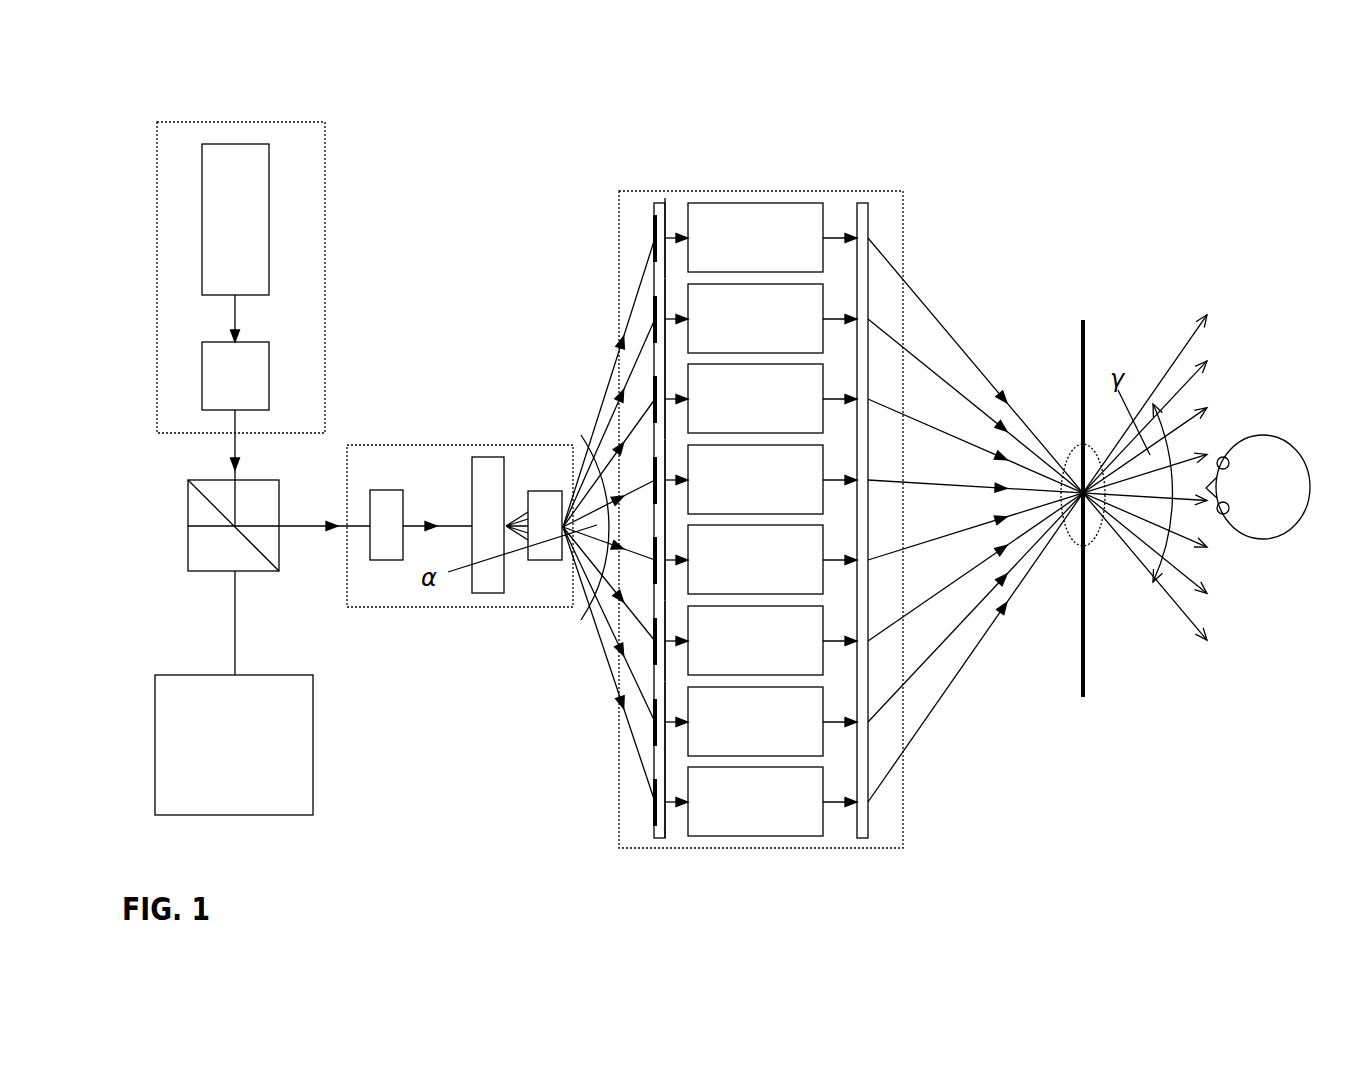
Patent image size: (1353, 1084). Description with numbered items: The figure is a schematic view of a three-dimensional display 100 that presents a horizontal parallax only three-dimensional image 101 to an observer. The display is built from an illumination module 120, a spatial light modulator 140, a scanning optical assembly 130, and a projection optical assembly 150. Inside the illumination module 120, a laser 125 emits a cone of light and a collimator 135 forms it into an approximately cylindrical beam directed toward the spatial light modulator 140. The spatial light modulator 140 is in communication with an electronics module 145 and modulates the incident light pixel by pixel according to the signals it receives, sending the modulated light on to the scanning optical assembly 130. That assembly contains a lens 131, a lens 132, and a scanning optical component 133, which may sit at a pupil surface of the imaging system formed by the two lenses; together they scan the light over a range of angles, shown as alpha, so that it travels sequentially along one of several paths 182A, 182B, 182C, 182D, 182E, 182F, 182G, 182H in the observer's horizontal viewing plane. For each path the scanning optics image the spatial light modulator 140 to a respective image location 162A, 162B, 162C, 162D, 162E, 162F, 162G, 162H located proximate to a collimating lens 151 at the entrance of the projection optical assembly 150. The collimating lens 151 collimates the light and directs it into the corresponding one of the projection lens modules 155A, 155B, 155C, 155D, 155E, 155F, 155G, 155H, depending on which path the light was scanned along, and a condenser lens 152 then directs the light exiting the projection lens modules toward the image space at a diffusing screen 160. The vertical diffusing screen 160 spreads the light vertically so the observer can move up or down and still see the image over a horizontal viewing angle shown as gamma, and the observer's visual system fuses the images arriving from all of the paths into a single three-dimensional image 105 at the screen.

The three-dimensional display 100 is at (970, 122).
The three-dimensional image 101 is at (1263, 503).
The three-dimensional image 105 is at (1068, 452).
The illumination module 120 is at (325, 257).
The laser 125 is at (216, 229).
The scanning optical assembly 130 is at (448, 607).
The lens 131 is at (391, 523).
The lens 132 is at (549, 525).
The scanning optical component 133 is at (483, 502).
The collimator 135 is at (216, 390).
The spatial light modulator 140 is at (188, 526).
The electronics module 145 is at (215, 763).
The projection optical assembly 150 is at (743, 191).
The collimating lens 151 is at (652, 838).
The condenser lens 152 is at (868, 840).
The projection lens module 155A is at (730, 250).
The projection lens module 155B is at (730, 331).
The projection lens module 155C is at (730, 411).
The projection lens module 155D is at (730, 492).
The projection lens module 155E is at (730, 572).
The projection lens module 155F is at (730, 653).
The projection lens module 155G is at (730, 734).
The projection lens module 155H is at (730, 814).
The diffusing screen 160 is at (1080, 632).
The image location 162A is at (654, 215).
The image location 162B is at (654, 296).
The image location 162C is at (654, 377).
The image location 162D is at (654, 458).
The image location 162E is at (643, 627).
The image location 162F is at (645, 695).
The image location 162G is at (645, 768).
The image location 162H is at (653, 818).
The path 182A is at (652, 256).
The path 182B is at (652, 336).
The path 182C is at (652, 416).
The path 182D is at (652, 497).
The path 182E is at (597, 540).
The path 182F is at (645, 661).
The path 182G is at (645, 735).
The path 182H is at (645, 787).